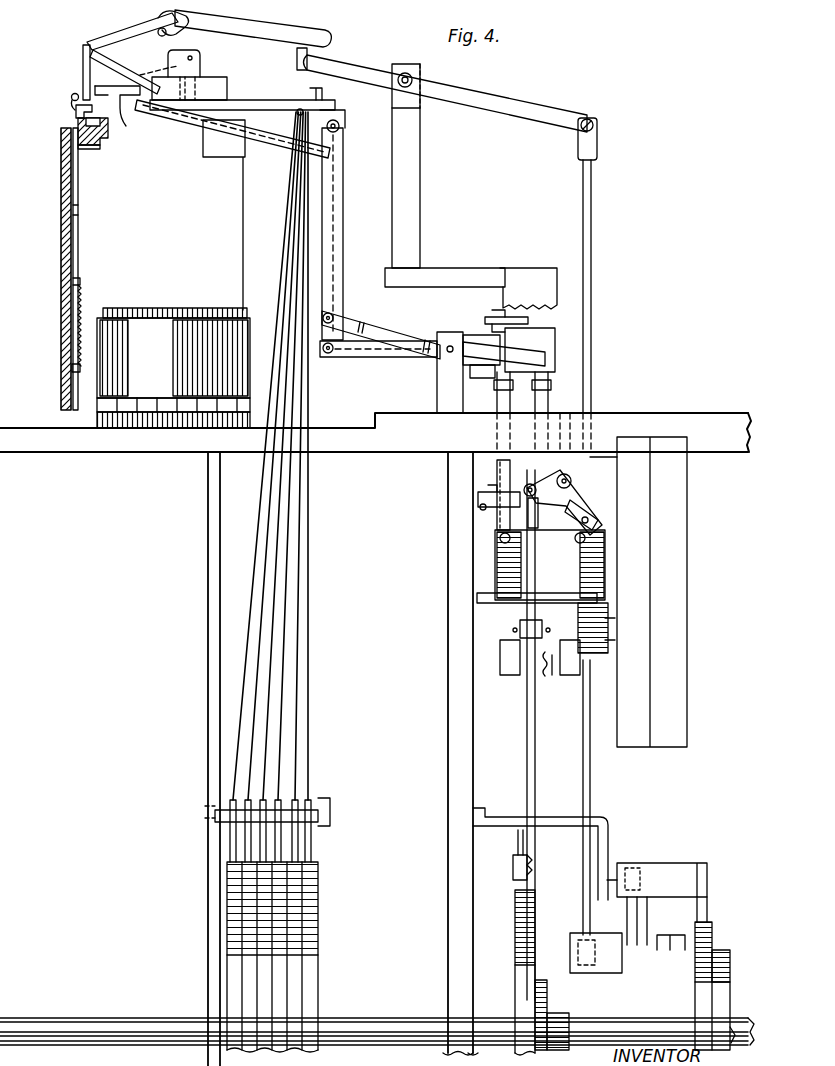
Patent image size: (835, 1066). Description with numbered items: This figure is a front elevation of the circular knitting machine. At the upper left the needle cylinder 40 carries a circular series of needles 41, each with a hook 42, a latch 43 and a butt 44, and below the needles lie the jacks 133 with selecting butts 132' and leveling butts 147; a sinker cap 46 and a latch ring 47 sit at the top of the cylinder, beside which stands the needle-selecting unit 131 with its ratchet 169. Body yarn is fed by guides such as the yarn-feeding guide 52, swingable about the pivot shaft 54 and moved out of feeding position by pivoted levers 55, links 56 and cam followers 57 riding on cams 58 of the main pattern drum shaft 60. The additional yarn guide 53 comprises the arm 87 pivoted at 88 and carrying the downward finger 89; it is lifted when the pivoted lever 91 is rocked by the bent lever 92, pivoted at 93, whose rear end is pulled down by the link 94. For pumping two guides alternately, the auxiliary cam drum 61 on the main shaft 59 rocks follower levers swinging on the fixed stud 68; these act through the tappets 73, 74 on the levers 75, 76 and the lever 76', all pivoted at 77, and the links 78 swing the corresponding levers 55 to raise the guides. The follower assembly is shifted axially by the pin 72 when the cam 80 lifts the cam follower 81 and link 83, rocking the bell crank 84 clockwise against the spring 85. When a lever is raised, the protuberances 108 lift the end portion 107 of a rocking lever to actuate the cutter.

The needle cylinder 40 is at (62, 180).
The needles 41 is at (78, 175).
The hook 42 is at (72, 94).
The latch 43 is at (80, 104).
The butt 44 is at (78, 211).
The sinker cap 46 is at (106, 136).
The latch ring 47 is at (92, 149).
The yarn-feeding guide 52 is at (117, 111).
The additional yarn-feeding guide 53 is at (129, 33).
The pivot shaft 54 is at (192, 60).
The pivoted levers 55 is at (180, 120).
The links 56 is at (304, 715).
The pivoted cam followers 57 is at (312, 852).
The cams 58 is at (312, 934).
The main shaft 59 is at (614, 590).
The main pattern drum shaft 60 is at (113, 1022).
The auxiliary cam drum 61 is at (608, 640).
The fixed stud 68 is at (498, 510).
The pin 72 is at (590, 526).
The tappet 73 is at (497, 476).
The tappet 74 is at (551, 395).
The lever 75 is at (376, 320).
The lever 76 is at (378, 365).
The lever 76' is at (546, 354).
The pivot 77 is at (428, 360).
The links 78 is at (340, 222).
The cam 80 is at (517, 907).
The cam follower 81 is at (513, 865).
The link 83 is at (527, 712).
The bell crank 84 is at (574, 478).
The spring 85 is at (549, 676).
The arm 87 is at (134, 72).
The pivot 88 is at (161, 28).
The finger 89 is at (83, 61).
The pivoted lever 91 is at (294, 38).
The bent lever 92 is at (366, 72).
The pivot 93 is at (413, 83).
The link 94 is at (590, 296).
The end portion 107 is at (507, 306).
The protuberances 108 is at (520, 333).
The needle-selecting unit 131 is at (160, 305).
The selecting butts 132' is at (111, 321).
The jacks 133 is at (77, 262).
The leveling butts 147 is at (80, 368).
The ratchet 169 is at (165, 424).